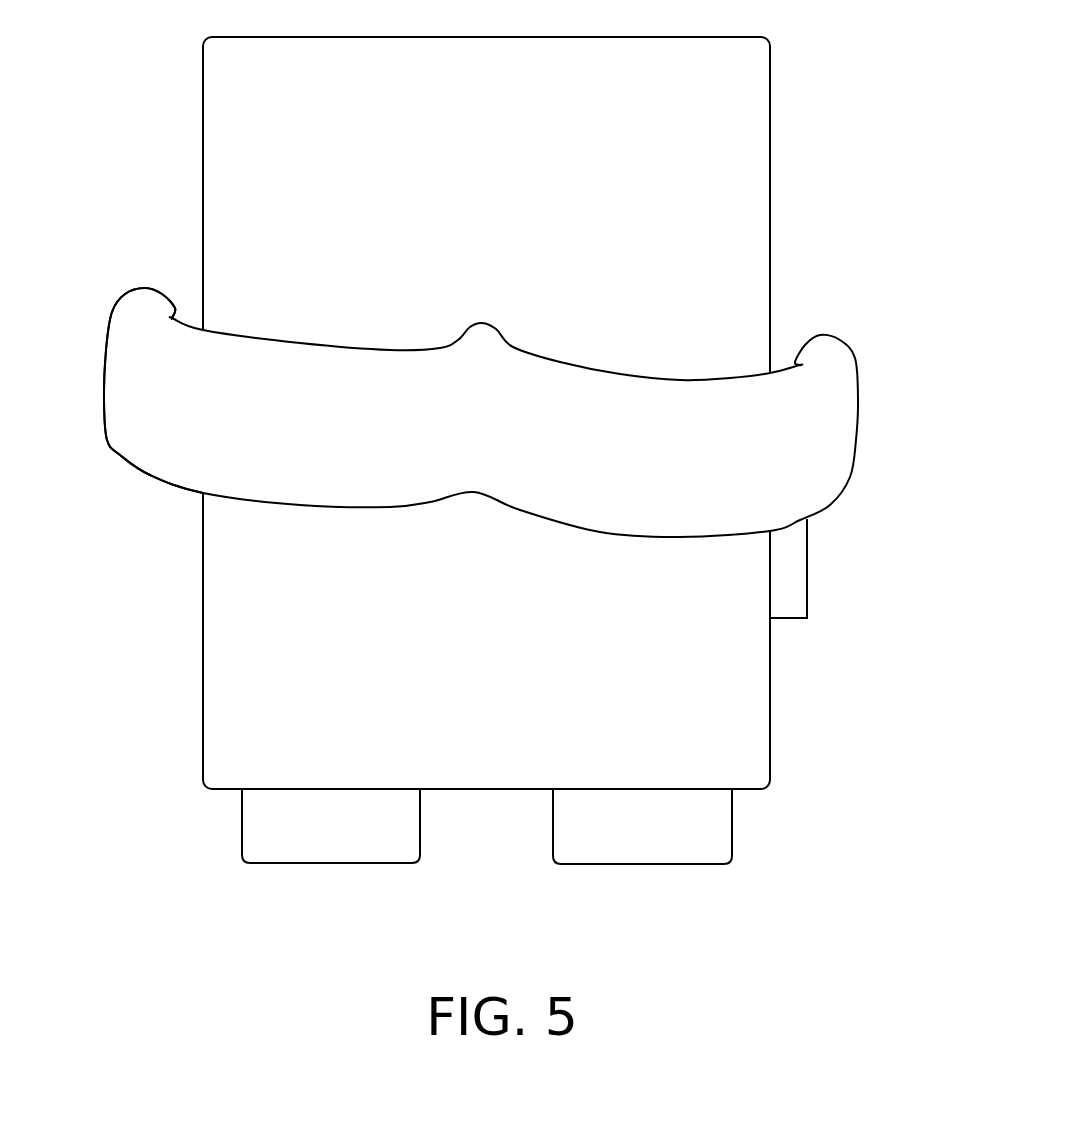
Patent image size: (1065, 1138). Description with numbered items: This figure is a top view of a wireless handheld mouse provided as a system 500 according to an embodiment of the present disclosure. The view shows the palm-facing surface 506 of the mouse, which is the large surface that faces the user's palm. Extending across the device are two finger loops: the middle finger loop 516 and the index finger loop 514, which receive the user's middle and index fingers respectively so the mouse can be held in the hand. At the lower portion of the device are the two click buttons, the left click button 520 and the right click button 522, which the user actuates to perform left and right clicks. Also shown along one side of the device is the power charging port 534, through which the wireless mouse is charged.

The system 500 is at (482, 487).
The palm-facing surface 506 is at (250, 143).
The index finger loop 514 is at (833, 413).
The middle finger loop 516 is at (150, 372).
The power charging port 534 is at (805, 591).
The left click button 520 is at (667, 837).
The right click button 522 is at (338, 820).